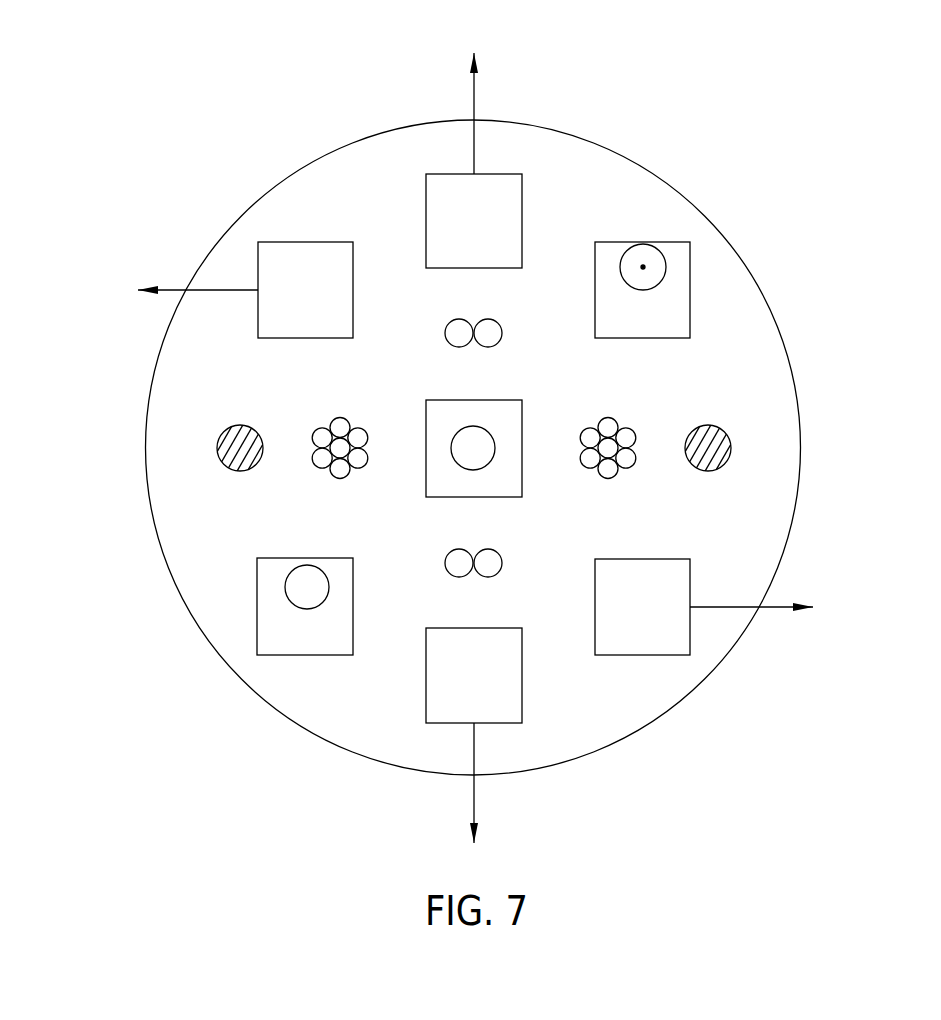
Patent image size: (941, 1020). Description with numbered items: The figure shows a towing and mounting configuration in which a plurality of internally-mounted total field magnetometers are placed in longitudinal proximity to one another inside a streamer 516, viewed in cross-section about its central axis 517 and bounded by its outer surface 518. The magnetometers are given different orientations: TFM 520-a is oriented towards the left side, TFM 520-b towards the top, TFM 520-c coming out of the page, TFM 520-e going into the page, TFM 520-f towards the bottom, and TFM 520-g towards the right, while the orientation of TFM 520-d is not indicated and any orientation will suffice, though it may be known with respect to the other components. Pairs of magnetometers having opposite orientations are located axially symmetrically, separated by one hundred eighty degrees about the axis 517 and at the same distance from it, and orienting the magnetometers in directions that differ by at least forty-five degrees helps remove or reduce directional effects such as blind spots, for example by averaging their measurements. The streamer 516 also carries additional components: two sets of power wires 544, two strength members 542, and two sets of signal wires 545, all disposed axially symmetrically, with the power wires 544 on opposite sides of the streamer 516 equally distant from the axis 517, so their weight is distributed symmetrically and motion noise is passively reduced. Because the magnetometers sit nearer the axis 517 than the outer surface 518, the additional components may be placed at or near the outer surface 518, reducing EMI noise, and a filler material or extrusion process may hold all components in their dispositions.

The streamer 516 is at (263, 157).
The axis 517 is at (483, 427).
The outer surface 518 is at (507, 113).
The TFM 520-a is at (278, 303).
The TFM 520-b is at (447, 235).
The TFM 520-c is at (616, 320).
The TFM 520-d is at (554, 313).
The TFM 520-e is at (278, 637).
The TFM 520-f is at (449, 689).
The TFM 520-g is at (615, 620).
The strength members 542 is at (222, 430).
The power wires 544 is at (438, 339).
The signal wires 545 is at (308, 475).